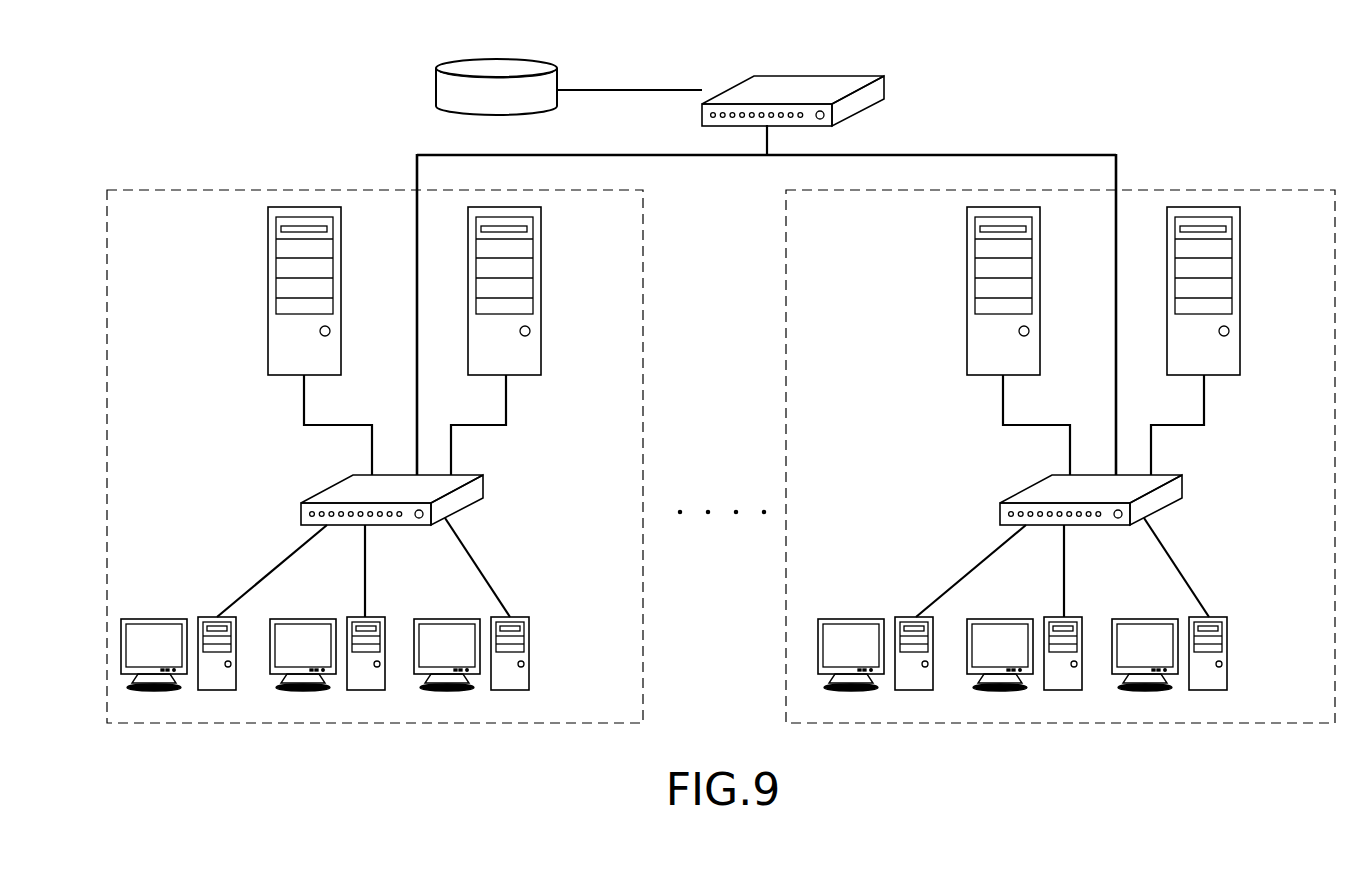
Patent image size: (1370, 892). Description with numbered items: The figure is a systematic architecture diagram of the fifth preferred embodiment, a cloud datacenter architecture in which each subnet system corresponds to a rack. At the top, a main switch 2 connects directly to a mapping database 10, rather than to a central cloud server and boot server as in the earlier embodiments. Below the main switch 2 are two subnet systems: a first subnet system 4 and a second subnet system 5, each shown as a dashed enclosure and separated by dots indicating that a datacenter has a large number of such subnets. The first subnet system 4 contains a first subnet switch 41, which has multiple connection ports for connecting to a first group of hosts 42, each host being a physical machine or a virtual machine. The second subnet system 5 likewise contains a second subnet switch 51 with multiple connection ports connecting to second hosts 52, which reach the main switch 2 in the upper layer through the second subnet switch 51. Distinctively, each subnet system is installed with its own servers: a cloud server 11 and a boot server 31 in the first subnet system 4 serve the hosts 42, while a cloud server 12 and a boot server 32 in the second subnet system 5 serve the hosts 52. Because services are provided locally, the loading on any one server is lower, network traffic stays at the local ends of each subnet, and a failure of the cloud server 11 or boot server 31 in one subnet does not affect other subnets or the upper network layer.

The mapping database 10 is at (448, 93).
The main switch 2 is at (870, 93).
The first subnet system 4 is at (172, 210).
The second subnet system 5 is at (1087, 212).
The cloud server 11 is at (276, 234).
The boot server 31 is at (534, 241).
The cloud server 12 is at (975, 234).
The boot server 32 is at (1233, 241).
The first subnet switch 41 is at (343, 499).
The second subnet switch 51 is at (1163, 493).
The first group of hosts 42 is at (540, 677).
The second hosts 52 is at (810, 672).